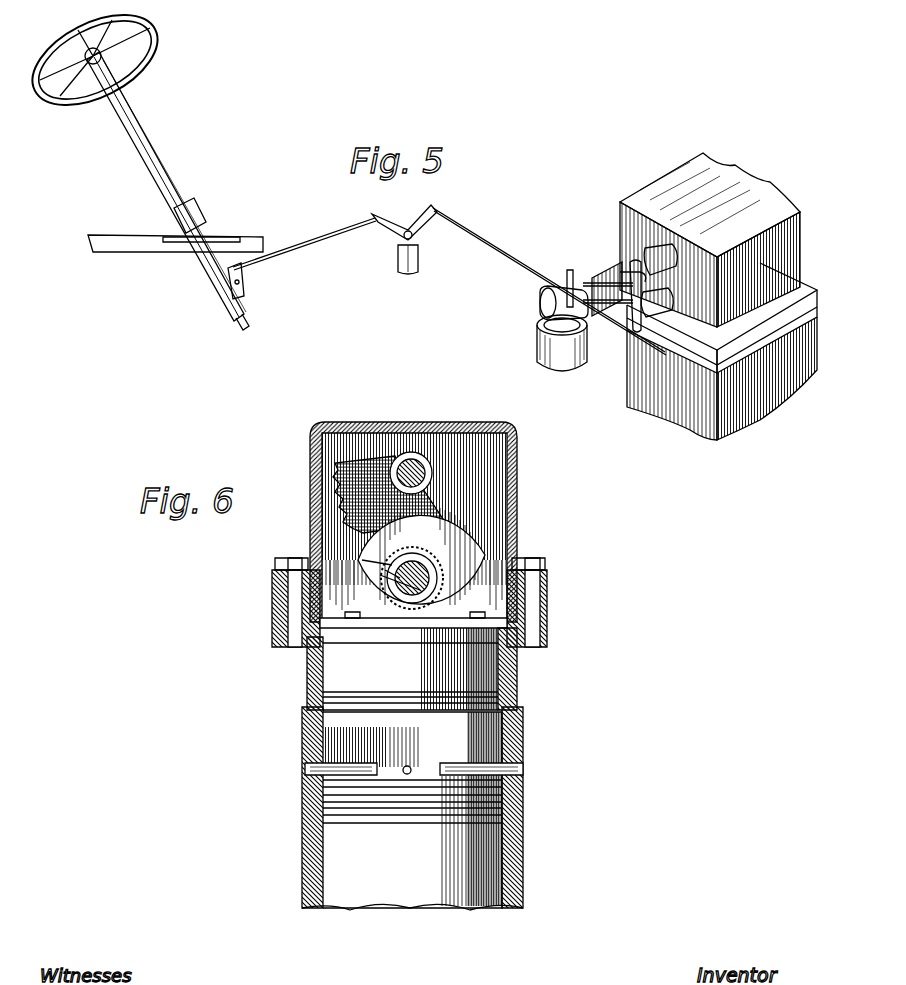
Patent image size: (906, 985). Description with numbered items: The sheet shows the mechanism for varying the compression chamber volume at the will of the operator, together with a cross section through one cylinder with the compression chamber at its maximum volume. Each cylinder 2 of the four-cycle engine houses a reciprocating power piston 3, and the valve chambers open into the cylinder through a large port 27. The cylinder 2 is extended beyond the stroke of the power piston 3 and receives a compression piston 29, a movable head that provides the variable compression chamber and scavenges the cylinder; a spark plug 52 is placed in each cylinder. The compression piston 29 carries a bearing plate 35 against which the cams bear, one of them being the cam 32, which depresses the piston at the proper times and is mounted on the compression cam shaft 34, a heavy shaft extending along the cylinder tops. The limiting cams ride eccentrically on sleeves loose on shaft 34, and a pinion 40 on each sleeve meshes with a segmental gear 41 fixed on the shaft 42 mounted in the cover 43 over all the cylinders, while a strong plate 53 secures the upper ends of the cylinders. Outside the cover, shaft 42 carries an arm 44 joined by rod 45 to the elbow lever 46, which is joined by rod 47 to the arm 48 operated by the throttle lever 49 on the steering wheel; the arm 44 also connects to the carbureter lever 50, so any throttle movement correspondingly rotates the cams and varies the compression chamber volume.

In FIG. 5, the cylinder 2 is at (700, 425).
In FIG. 6, the cylinder 2 is at (527, 802).
In FIG. 6, the power piston 3 is at (335, 836).
In FIG. 6, the port 27 is at (411, 768).
In FIG. 6, the compression piston 29 is at (520, 670).
In FIG. 6, the cam 32 is at (480, 556).
In FIG. 6, the compression cam shaft 34 is at (385, 575).
In FIG. 6, the bearing plate 35 is at (362, 560).
In FIG. 6, the pinion 40 is at (525, 552).
In FIG. 6, the segmental gear 41 is at (385, 460).
In FIG. 6, the shaft 42 is at (422, 465).
In FIG. 5, the cover 43 is at (715, 182).
In FIG. 6, the cover 43 is at (515, 490).
In FIG. 5, the arm 44 is at (612, 272).
In FIG. 5, the rod 45 is at (494, 243).
In FIG. 5, the elbow lever 46 is at (388, 238).
In FIG. 5, the rod 47 is at (296, 242).
In FIG. 5, the arm 48 is at (242, 284).
In FIG. 5, the throttle lever 49 is at (110, 35).
In FIG. 5, the carbureter lever 50 is at (563, 276).
In FIG. 6, the spark plug 52 is at (455, 766).
In FIG. 5, the plate 53 is at (695, 357).
In FIG. 6, the plate 53 is at (546, 627).